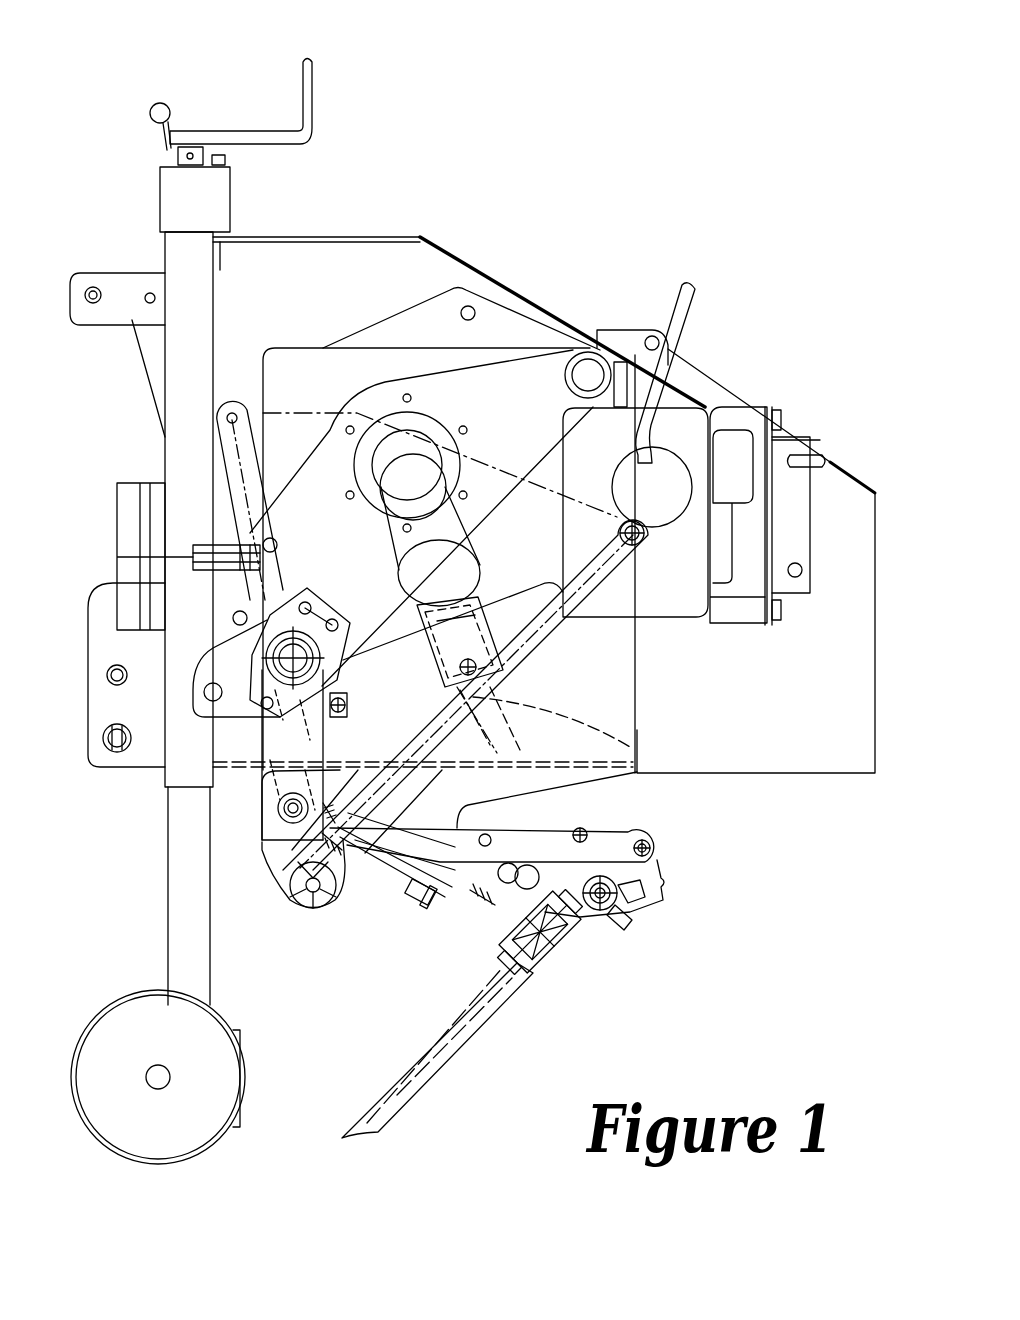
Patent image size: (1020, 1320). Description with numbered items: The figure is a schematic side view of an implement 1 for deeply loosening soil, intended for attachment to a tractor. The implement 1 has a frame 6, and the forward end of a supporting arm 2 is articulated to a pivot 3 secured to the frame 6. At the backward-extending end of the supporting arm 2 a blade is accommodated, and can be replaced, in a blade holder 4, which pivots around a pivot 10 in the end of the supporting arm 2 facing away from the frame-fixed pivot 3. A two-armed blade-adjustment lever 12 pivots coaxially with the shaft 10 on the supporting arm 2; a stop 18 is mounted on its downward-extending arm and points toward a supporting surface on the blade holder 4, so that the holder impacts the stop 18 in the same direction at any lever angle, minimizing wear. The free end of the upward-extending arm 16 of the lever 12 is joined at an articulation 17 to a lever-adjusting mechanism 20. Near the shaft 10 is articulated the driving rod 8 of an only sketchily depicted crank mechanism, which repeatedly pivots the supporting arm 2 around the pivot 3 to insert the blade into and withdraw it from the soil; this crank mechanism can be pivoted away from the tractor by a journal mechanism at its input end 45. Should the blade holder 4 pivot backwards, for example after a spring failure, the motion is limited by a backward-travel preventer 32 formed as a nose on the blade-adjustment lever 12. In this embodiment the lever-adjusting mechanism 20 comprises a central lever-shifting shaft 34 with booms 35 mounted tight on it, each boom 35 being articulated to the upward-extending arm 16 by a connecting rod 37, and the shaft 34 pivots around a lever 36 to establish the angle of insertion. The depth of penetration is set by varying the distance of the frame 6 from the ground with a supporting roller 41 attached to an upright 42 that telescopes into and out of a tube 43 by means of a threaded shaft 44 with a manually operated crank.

The implement 1 is at (664, 220).
The supporting arm 2 is at (435, 905).
The pivot 3 is at (270, 815).
The blade holder 4 is at (580, 933).
The frame 6 is at (322, 600).
The driving rod 8 is at (540, 808).
The pivot 10 is at (627, 920).
The blade-adjustment lever 12 is at (628, 902).
The upward-extending arm 16 is at (640, 866).
The articulation 17 is at (650, 834).
The stop 18 is at (497, 943).
The lever-adjusting mechanism 20 is at (607, 833).
The backward-travel preventer 32 is at (647, 895).
The central lever-shifting shaft 34 is at (325, 895).
The boom 35 is at (283, 865).
The lever 36 is at (528, 660).
The connecting rod 37 is at (478, 832).
The supporting roller 41 is at (213, 1028).
The upright 42 is at (180, 900).
The tube 43 is at (200, 310).
The threaded shaft 44 is at (242, 100).
The input end 45 is at (197, 545).